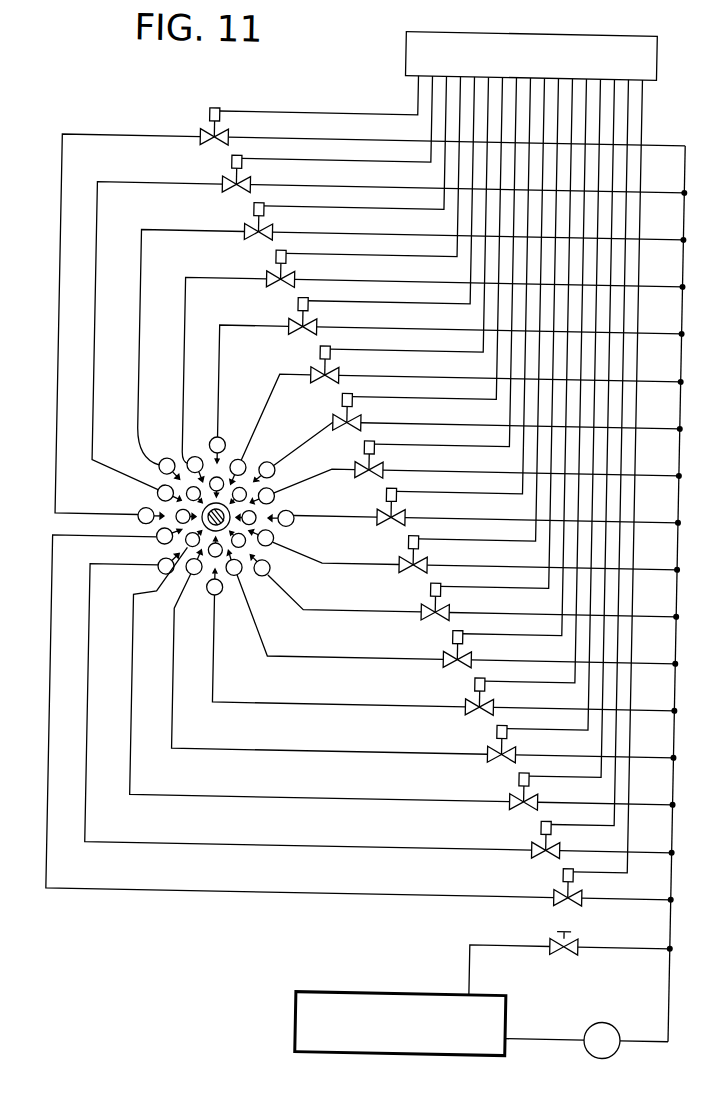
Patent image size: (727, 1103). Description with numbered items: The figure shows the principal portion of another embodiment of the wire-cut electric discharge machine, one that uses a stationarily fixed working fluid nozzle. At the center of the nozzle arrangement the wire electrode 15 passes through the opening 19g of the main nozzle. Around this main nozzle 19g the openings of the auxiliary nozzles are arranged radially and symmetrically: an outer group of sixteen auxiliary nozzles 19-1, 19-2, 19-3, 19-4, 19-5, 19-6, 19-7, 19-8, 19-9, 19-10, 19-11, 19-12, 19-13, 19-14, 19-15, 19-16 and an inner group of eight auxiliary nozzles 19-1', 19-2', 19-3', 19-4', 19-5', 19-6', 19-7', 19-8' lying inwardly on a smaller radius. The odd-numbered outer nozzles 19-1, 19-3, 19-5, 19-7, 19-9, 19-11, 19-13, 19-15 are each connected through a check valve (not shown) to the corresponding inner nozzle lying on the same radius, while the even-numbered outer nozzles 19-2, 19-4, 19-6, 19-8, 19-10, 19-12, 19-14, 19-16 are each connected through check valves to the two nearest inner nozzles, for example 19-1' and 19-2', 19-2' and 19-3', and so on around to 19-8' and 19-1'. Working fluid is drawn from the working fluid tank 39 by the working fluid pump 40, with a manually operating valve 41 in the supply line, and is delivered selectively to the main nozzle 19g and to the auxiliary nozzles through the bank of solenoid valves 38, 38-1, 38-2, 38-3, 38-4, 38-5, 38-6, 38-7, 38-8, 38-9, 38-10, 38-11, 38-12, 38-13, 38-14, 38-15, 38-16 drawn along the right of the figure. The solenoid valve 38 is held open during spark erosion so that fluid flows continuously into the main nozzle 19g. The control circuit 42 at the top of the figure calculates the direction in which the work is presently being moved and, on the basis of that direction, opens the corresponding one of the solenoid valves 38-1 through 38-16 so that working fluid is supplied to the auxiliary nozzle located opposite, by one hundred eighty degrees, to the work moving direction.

The control circuit 42 is at (397, 60).
The solenoid valve 38-1 is at (213, 123).
The solenoid valve 38-2 is at (236, 170).
The solenoid valve 38-3 is at (259, 217).
The solenoid valve 38-4 is at (282, 264).
The solenoid valve 38-5 is at (305, 311).
The solenoid valve 38-6 is at (328, 359).
The solenoid valve 38-7 is at (351, 406).
The solenoid valve 38-8 is at (374, 453).
The solenoid valve 38-9 is at (397, 500).
The solenoid valve 38-10 is at (420, 547).
The solenoid valve 38-11 is at (443, 594).
The solenoid valve 38-12 is at (466, 641).
The solenoid valve 38-13 is at (489, 688).
The solenoid valve 38-14 is at (512, 735).
The solenoid valve 38-15 is at (535, 782).
The solenoid valve 38-16 is at (558, 830).
The solenoid valve 38 is at (581, 877).
The manually operating valve 41 is at (586, 937).
The working fluid pump 40 is at (622, 1016).
The working fluid tank 39 is at (305, 1012).
The wire electrode 15 is at (222, 600).
The main nozzle opening 19g is at (209, 529).
The auxiliary nozzle opening 19-1 is at (115, 509).
The auxiliary nozzle opening 19-2 is at (134, 467).
The auxiliary nozzle opening 19-3 is at (159, 422).
The auxiliary nozzle opening 19-4 is at (208, 382).
The auxiliary nozzle opening 19-5 is at (241, 398).
The auxiliary nozzle opening 19-6 is at (255, 418).
The auxiliary nozzle opening 19-7 is at (295, 468).
The auxiliary nozzle opening 19-8 is at (303, 497).
The auxiliary nozzle opening 19-9 is at (293, 520).
The auxiliary nozzle opening 19-10 is at (273, 542).
The auxiliary nozzle opening 19-11 is at (266, 575).
The auxiliary nozzle opening 19-12 is at (239, 576).
The auxiliary nozzle opening 19-13 is at (217, 596).
The auxiliary nozzle opening 19-14 is at (176, 618).
The auxiliary nozzle opening 19-15 is at (160, 570).
The auxiliary nozzle opening 19-16 is at (157, 539).
The inner auxiliary nozzle opening 19-1' is at (133, 500).
The inner auxiliary nozzle opening 19-2' is at (148, 458).
The inner auxiliary nozzle opening 19-3' is at (219, 401).
The inner auxiliary nozzle opening 19-4' is at (272, 460).
The inner auxiliary nozzle opening 19-5' is at (296, 536).
The inner auxiliary nozzle opening 19-6' is at (286, 572).
The inner auxiliary nozzle opening 19-7' is at (200, 594).
The inner auxiliary nozzle opening 19-8' is at (149, 555).